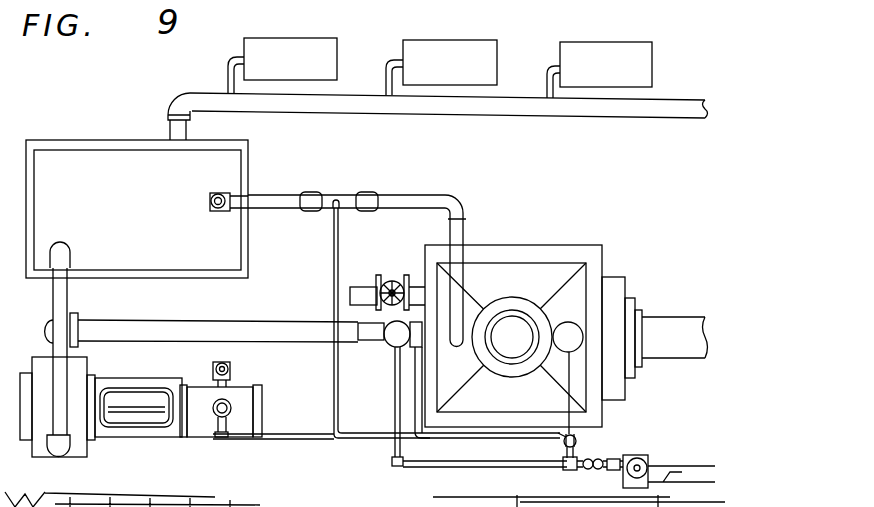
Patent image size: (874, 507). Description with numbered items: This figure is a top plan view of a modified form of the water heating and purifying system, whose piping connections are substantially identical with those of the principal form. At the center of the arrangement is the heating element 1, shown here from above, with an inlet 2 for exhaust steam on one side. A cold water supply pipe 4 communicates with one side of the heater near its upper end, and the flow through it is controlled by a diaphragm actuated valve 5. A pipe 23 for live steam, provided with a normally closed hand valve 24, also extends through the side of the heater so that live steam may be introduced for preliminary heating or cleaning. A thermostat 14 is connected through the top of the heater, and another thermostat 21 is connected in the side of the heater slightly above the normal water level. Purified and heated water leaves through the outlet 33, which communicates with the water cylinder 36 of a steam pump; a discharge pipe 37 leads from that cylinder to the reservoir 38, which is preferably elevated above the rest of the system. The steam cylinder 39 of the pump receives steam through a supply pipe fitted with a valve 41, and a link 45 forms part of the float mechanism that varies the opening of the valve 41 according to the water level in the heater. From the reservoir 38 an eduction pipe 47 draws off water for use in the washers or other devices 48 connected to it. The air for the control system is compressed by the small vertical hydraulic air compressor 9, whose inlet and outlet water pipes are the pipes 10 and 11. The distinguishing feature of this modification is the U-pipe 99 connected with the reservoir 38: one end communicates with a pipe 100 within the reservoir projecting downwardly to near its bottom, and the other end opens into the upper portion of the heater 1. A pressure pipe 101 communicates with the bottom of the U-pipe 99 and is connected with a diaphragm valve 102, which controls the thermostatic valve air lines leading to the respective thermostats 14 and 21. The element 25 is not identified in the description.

The heating element 1 is at (513, 336).
The inlet 2 is at (675, 337).
The cold water supply pipe 4 is at (372, 341).
The diaphragm actuated valve 5 is at (392, 346).
The hydraulic air compressor 9 is at (648, 461).
The inlet water pipe 10 is at (670, 473).
The outlet water pipe 11 is at (680, 483).
The thermostat 14 is at (568, 378).
The thermostat 21 is at (426, 367).
The live steam pipe 23 is at (364, 290).
The hand valve 24 is at (392, 282).
The shaft housing 25 is at (622, 338).
The outlet 33 is at (283, 333).
The water cylinder 36 is at (80, 430).
The discharge pipe 37 is at (62, 300).
The reservoir 38 is at (137, 209).
The steam cylinder 39 is at (247, 390).
The valve 41 is at (232, 408).
The link 45 is at (307, 442).
The eduction pipe 47 is at (481, 104).
The washers 48 is at (440, 68).
The U-pipe 99 is at (350, 203).
The pipe 100 is at (215, 211).
The pressure pipe 101 is at (336, 378).
The diaphragm valve 102 is at (580, 441).